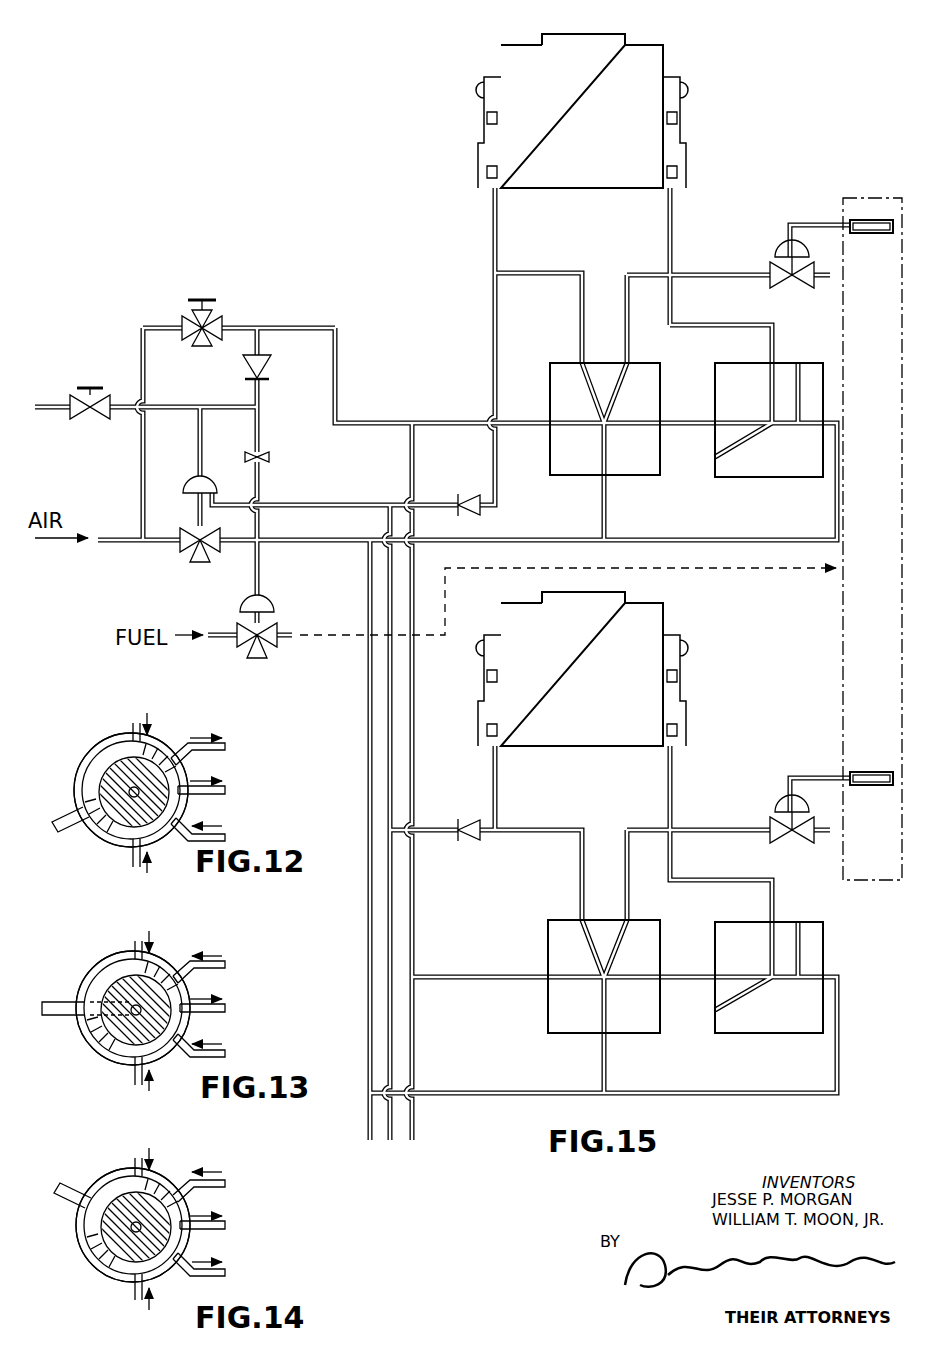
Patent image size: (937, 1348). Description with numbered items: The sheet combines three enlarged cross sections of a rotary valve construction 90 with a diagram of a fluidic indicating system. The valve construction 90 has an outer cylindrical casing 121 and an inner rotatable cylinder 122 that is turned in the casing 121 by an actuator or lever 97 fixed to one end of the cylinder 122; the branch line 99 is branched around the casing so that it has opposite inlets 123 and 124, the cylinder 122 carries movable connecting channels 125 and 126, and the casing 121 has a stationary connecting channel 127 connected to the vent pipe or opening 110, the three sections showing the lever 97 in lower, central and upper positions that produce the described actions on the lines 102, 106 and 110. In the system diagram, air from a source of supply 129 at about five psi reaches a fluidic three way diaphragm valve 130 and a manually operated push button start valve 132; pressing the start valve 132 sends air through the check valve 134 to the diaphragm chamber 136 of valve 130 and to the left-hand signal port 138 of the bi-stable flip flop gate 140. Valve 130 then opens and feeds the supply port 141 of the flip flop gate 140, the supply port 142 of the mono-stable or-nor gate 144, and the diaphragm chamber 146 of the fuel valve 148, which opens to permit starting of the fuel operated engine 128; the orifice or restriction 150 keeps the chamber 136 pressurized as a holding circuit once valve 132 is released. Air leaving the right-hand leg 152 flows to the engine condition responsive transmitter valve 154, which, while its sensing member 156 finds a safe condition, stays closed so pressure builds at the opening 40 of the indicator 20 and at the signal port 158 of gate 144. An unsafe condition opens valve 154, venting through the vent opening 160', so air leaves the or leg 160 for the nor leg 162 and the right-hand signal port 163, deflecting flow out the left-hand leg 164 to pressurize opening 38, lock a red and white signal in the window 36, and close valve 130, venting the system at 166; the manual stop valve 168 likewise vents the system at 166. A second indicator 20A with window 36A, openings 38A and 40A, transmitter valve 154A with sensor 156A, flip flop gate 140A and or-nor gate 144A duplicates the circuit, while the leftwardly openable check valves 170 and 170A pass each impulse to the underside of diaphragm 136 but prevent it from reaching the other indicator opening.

In FIG. 15, the indicator 20 is at (640, 85).
In FIG. 15, the window 36 is at (590, 34).
In FIG. 15, the indicator opening 38 is at (500, 192).
In FIG. 15, the indicator opening 40 is at (672, 192).
In FIG. 15, the sensing member 156 is at (862, 220).
In FIG. 15, the engine condition responsive transmitter valve 154 is at (782, 286).
In FIG. 15, the vent opening 160' is at (855, 295).
In FIG. 15, the signal port 158 is at (773, 360).
In FIG. 15, the right-hand leg 152 is at (622, 375).
In FIG. 15, the left-hand leg 164 is at (586, 375).
In FIG. 15, the right-hand signal port 163 is at (662, 421).
In FIG. 15, the left-hand signal port 138 is at (548, 427).
In FIG. 15, the nor leg 162 is at (700, 430).
In FIG. 15, the supply port 142 is at (815, 428).
In FIG. 15, the or leg 160 is at (744, 450).
In FIG. 15, the supply port 141 is at (600, 480).
In FIG. 15, the flip flop gate 140 is at (630, 478).
In FIG. 15, the or-nor gate 144 is at (780, 480).
In FIG. 15, the push button three way start valve 132 is at (203, 310).
In FIG. 15, the manual stop valve 168 is at (87, 395).
In FIG. 15, the check valve 134 is at (270, 368).
In FIG. 15, the orifice or restriction 150 is at (268, 455).
In FIG. 15, the diaphragm chamber 136 is at (188, 483).
In FIG. 15, the check valve 170 is at (468, 494).
In FIG. 15, the source of supply of air under pressure 129 is at (118, 543).
In FIG. 15, the fluidic three way diaphragm valve 130 is at (185, 551).
In FIG. 15, the vent 166 is at (205, 563).
In FIG. 15, the diaphragm chamber 146 is at (272, 605).
In FIG. 15, the fuel valve 148 is at (270, 650).
In FIG. 15, the fuel operated engine 128 is at (842, 640).
In FIG. 15, the indicator 20A is at (640, 640).
In FIG. 15, the signal window 36A is at (622, 596).
In FIG. 15, the indicator opening 38A is at (500, 750).
In FIG. 15, the indicator opening 40A is at (672, 750).
In FIG. 15, the transmitter sensor 156A is at (870, 772).
In FIG. 15, the transmitter valve 154A is at (782, 843).
In FIG. 15, the check valve 170A is at (468, 820).
In FIG. 15, the flip flop gate 140A is at (600, 1036).
In FIG. 15, the or-nor gate 144A is at (775, 1035).
In FIG. 12, the valve construction 90 is at (100, 722).
In FIG. 13, the valve construction 90 is at (92, 945).
In FIG. 14, the valve construction 90 is at (90, 1155).
In FIG. 12, the outer cylindrical casing 121 is at (100, 768).
In FIG. 13, the outer cylindrical casing 121 is at (100, 972).
In FIG. 14, the outer cylindrical casing 121 is at (95, 1240).
In FIG. 12, the inner rotatable cylinder 122 is at (105, 790).
In FIG. 13, the inner rotatable cylinder 122 is at (105, 992).
In FIG. 14, the inner rotatable cylinder 122 is at (100, 1262).
In FIG. 12, the branch line 99 is at (90, 808).
In FIG. 13, the branch line 99 is at (133, 1080).
In FIG. 14, the branch line 99 is at (135, 1295).
In FIG. 12, the inlet 124 is at (125, 745).
In FIG. 12, the inlet 123 is at (135, 860).
In FIG. 12, the actuator or lever 97 is at (70, 832).
In FIG. 13, the actuator or lever 97 is at (60, 1016).
In FIG. 14, the actuator or lever 97 is at (72, 1190).
In FIG. 12, the movable connecting channel 125 is at (165, 752).
In FIG. 13, the movable connecting channel 125 is at (165, 972).
In FIG. 14, the movable connecting channel 125 is at (180, 1195).
In FIG. 12, the stationary connecting channel 127 is at (185, 785).
In FIG. 13, the stationary connecting channel 127 is at (185, 1003).
In FIG. 14, the stationary connecting channel 127 is at (180, 1236).
In FIG. 12, the movable connecting channel 126 is at (185, 808).
In FIG. 13, the movable connecting channel 126 is at (185, 1025).
In FIG. 14, the movable connecting channel 126 is at (150, 1268).
In FIG. 12, the line 102 is at (225, 746).
In FIG. 13, the line 102 is at (225, 964).
In FIG. 14, the line 102 is at (222, 1180).
In FIG. 12, the vent pipe or opening 110 is at (225, 790).
In FIG. 13, the vent pipe or opening 110 is at (225, 1008).
In FIG. 12, the line 106 is at (225, 838).
In FIG. 13, the line 106 is at (225, 1054).
In FIG. 14, the line 106 is at (225, 1274).